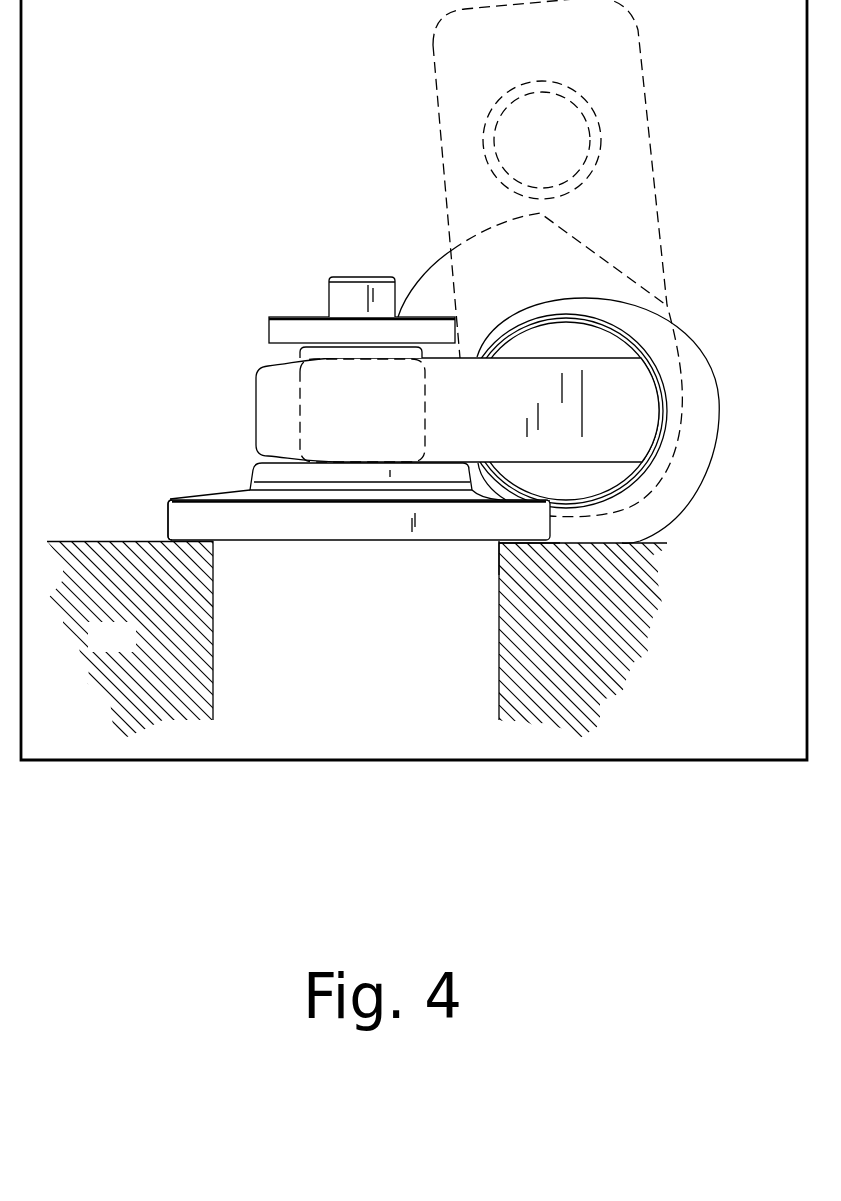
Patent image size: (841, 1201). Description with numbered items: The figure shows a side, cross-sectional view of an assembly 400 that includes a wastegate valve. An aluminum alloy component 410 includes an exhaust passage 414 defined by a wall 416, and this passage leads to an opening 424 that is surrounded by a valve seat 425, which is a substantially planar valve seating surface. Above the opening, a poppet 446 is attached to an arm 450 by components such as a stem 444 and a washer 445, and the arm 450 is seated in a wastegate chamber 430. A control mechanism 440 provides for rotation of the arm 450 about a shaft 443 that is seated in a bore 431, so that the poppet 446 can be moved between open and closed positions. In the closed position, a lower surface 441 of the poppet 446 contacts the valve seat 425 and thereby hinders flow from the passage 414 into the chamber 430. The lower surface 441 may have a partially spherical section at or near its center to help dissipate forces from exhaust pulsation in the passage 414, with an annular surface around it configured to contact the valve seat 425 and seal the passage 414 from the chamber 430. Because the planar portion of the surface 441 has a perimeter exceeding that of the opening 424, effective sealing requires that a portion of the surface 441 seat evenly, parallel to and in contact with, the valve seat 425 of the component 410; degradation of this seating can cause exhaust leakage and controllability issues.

The assembly 400 is at (87, 46).
The aluminum alloy component 410 is at (130, 648).
The exhaust passage 414 is at (279, 718).
The wall 416 is at (499, 650).
The opening 424 is at (499, 548).
The valve seat 425 is at (166, 539).
The wastegate chamber 430 is at (147, 258).
The bore 431 is at (682, 387).
The control mechanism 440 is at (667, 152).
The lower surface 441 is at (312, 545).
The shaft 443 is at (664, 378).
The stem 444 is at (348, 275).
The washer 445 is at (284, 315).
The poppet 446 is at (207, 515).
The arm 450 is at (497, 420).